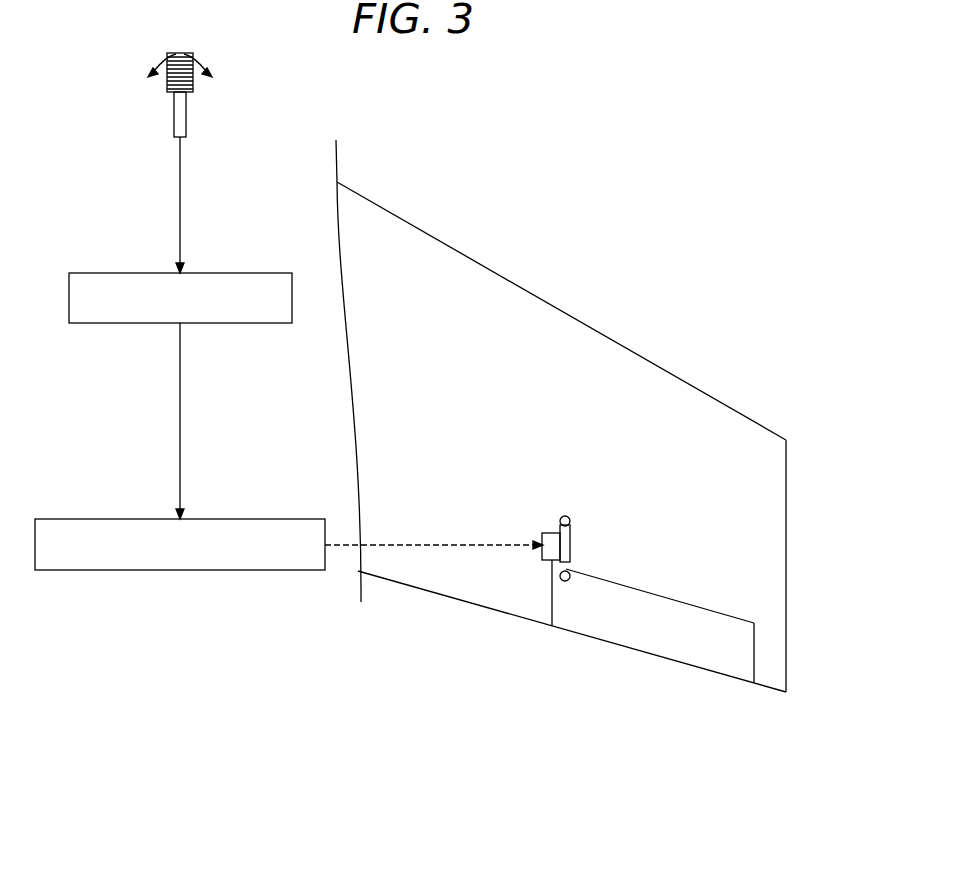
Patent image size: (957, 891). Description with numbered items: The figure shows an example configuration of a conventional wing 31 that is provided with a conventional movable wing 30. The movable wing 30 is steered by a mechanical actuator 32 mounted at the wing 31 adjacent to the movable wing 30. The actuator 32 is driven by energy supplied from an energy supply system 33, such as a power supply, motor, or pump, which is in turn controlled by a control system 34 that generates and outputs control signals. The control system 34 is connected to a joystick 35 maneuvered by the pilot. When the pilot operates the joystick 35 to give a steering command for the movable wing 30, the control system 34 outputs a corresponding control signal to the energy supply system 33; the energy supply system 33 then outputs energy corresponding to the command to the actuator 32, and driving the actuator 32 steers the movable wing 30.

The movable wing 30 is at (649, 636).
The wing 31 is at (556, 290).
The actuator 32 is at (550, 550).
The energy supply system 33 is at (207, 570).
The control system 34 is at (212, 323).
The joystick 35 is at (181, 137).